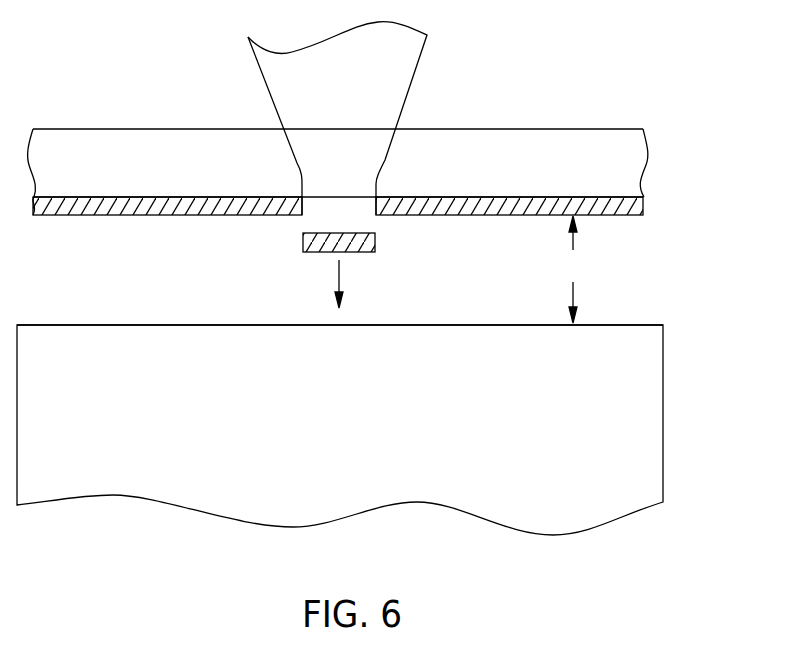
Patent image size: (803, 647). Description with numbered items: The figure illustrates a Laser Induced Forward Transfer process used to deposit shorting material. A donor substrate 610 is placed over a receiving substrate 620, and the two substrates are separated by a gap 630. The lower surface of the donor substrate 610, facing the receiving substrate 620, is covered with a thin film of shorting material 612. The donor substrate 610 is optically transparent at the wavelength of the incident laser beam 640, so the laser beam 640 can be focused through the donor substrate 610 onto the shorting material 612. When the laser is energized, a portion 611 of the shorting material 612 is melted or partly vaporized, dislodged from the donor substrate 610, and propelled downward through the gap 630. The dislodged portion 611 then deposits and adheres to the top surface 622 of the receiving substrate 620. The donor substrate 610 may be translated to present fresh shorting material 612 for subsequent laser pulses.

The donor substrate 610 is at (575, 140).
The portion of the shorting material 611 is at (375, 240).
The shorting material 612 is at (645, 202).
The receiving substrate 620 is at (648, 388).
The top surface 622 is at (622, 320).
The gap 630 is at (574, 269).
The laser beam 640 is at (410, 66).